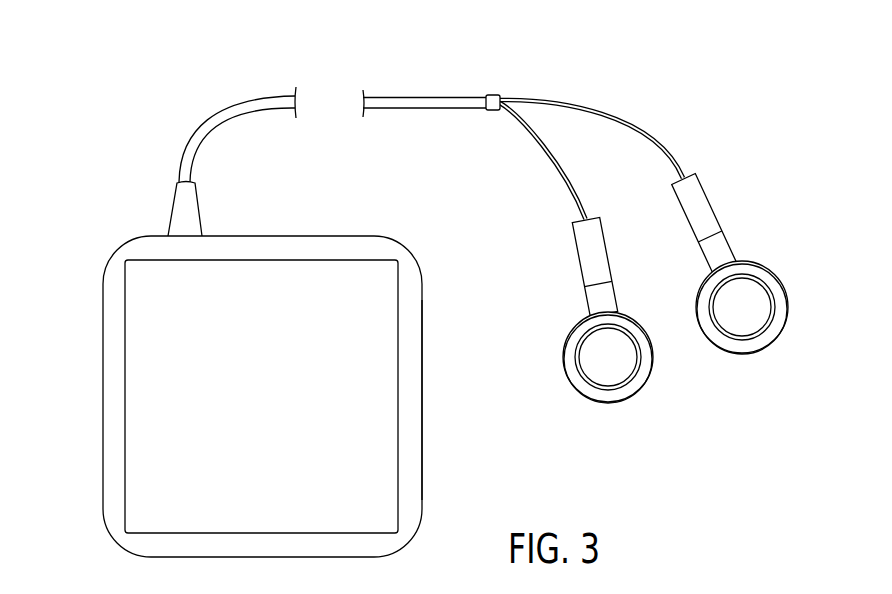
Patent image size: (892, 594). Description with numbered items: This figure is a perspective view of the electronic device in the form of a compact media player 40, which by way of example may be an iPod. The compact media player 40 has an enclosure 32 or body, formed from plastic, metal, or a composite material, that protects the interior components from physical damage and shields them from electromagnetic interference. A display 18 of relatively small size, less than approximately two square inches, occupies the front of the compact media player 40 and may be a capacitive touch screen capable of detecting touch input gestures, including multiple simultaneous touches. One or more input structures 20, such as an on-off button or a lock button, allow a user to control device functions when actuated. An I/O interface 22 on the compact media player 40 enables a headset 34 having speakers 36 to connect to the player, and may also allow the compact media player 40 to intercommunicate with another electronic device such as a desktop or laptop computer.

The compact media player 40 is at (110, 201).
The input structure 20 is at (340, 236).
The enclosure 32 is at (422, 322).
The display 18 is at (376, 358).
The I/O interface 22 is at (200, 203).
The headset 34 is at (218, 130).
The speakers 36 is at (632, 318).